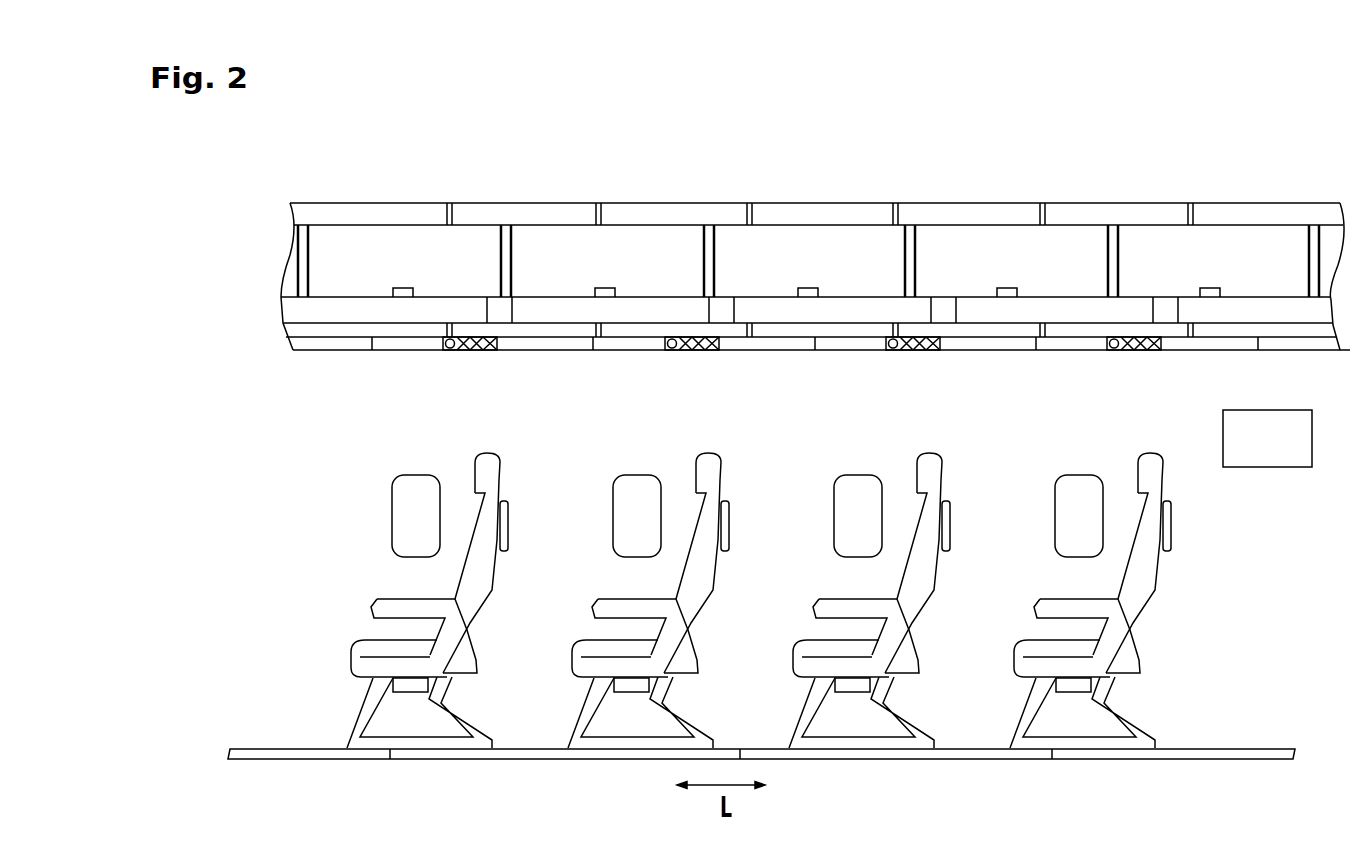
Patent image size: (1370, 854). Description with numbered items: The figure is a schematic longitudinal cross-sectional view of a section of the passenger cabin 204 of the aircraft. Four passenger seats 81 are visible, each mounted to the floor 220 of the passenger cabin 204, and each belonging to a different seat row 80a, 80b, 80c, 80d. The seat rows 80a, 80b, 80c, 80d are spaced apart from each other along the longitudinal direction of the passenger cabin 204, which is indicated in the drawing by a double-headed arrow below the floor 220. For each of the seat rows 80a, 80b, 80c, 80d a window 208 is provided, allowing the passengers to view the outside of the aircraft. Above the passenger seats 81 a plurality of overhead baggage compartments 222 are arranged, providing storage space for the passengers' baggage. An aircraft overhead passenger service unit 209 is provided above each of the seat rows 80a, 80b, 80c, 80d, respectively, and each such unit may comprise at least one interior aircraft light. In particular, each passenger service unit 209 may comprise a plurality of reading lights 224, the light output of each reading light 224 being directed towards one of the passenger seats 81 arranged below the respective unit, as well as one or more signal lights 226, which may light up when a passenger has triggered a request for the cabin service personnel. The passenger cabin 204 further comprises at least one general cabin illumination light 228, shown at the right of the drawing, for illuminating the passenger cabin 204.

The overhead baggage compartment 222 is at (428, 247).
The reading light 224 is at (488, 348).
The signal light 226 is at (453, 355).
The aircraft overhead passenger service unit 209 is at (466, 358).
The passenger seat 81 is at (494, 440).
The window 208 is at (402, 500).
The seat row 80a is at (380, 583).
The seat row 80b is at (601, 583).
The seat row 80c is at (822, 583).
The seat row 80d is at (1043, 583).
The passenger cabin 204 is at (278, 601).
The floor 220 is at (1243, 749).
The general cabin illumination light 228 is at (1262, 450).